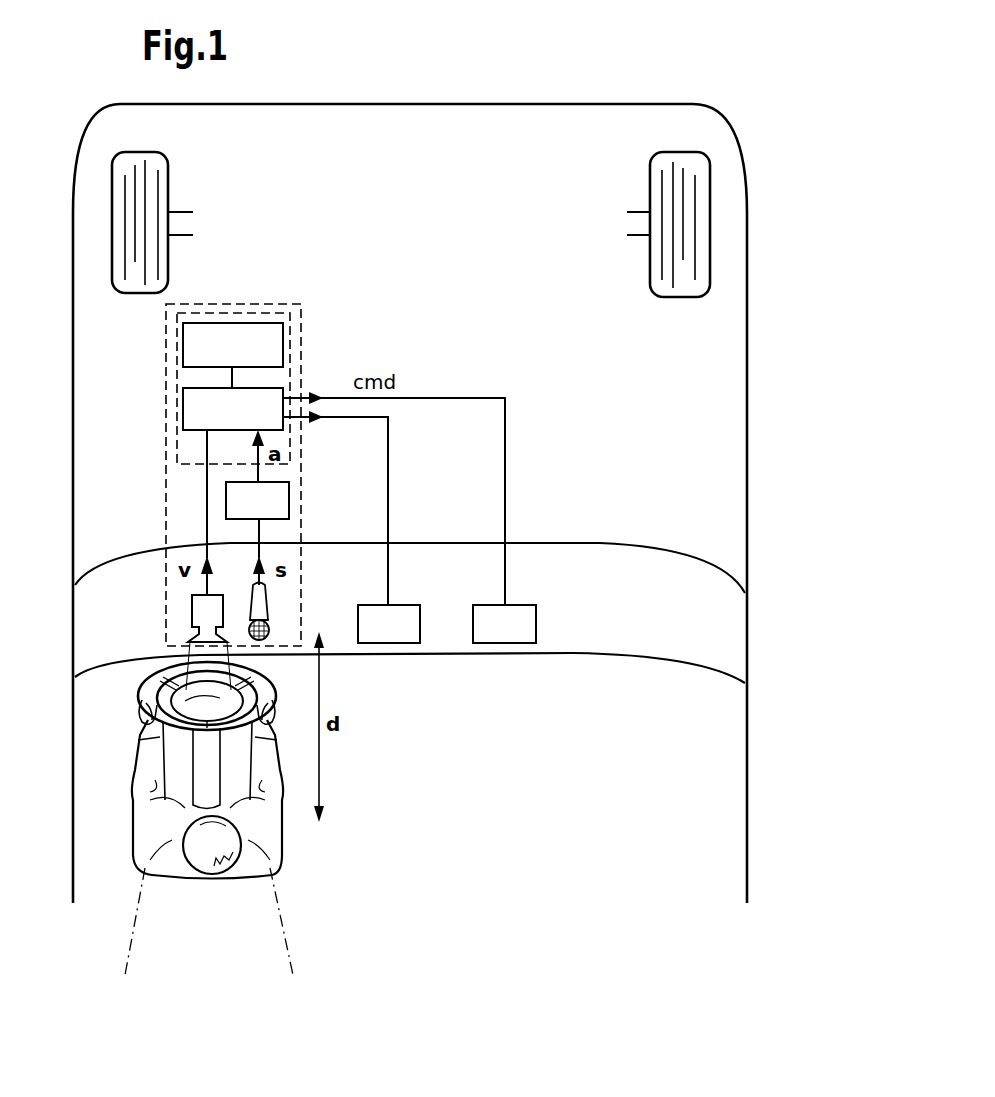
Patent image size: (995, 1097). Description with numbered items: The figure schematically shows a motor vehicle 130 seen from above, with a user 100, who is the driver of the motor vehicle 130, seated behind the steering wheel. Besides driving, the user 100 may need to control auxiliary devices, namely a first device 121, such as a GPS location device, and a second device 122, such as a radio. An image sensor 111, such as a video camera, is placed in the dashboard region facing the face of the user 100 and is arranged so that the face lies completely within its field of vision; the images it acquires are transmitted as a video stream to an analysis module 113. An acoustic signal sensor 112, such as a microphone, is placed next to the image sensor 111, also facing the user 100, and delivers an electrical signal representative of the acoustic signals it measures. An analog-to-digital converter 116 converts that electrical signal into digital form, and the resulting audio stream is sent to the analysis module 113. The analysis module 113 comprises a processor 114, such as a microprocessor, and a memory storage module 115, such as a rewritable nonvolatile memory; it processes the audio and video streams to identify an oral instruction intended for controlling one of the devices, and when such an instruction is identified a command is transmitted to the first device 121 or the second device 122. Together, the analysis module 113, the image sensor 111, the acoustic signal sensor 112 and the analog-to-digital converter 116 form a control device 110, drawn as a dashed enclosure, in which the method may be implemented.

The user 100 is at (178, 878).
The control device 110 is at (284, 298).
The image sensor 111 is at (192, 599).
The acoustic signal sensor 112 is at (267, 603).
The analysis module 113 is at (187, 465).
The processor 114 is at (233, 409).
The memory storage module 115 is at (233, 345).
The analog-to-digital converter 116 is at (257, 500).
The first device 121 is at (389, 624).
The second device 122 is at (504, 624).
The motor vehicle 130 is at (542, 96).